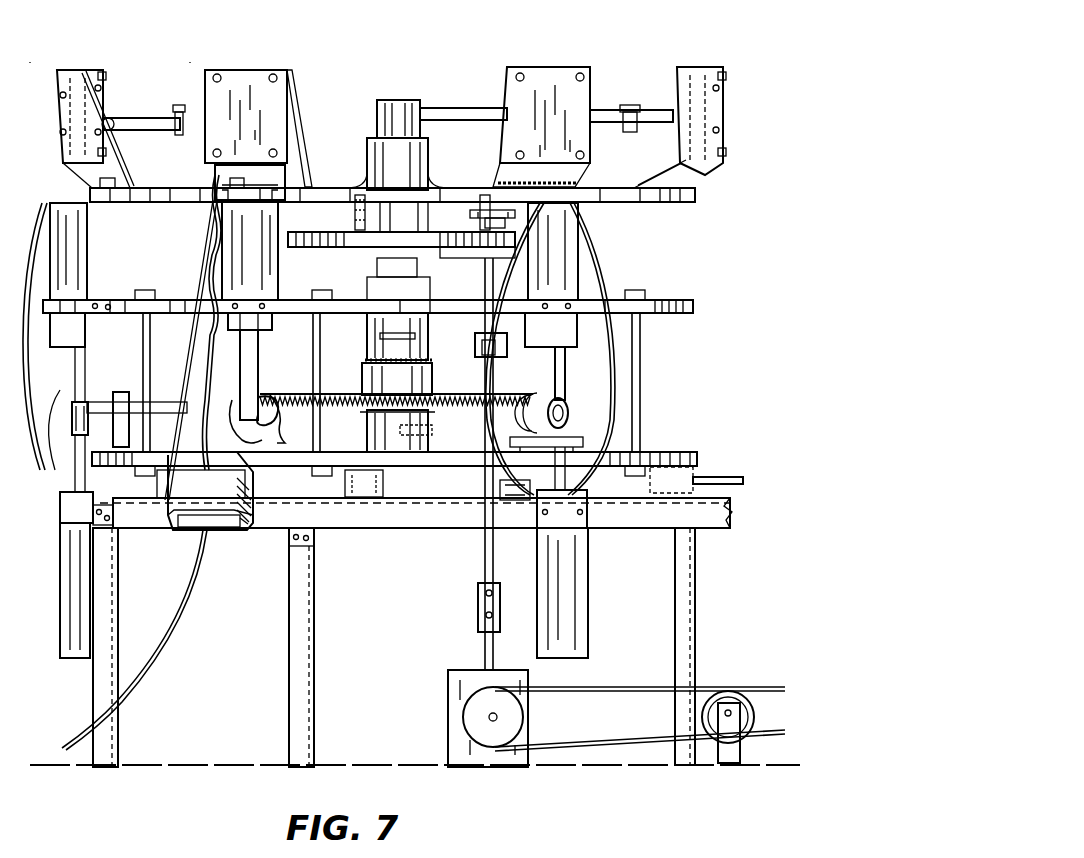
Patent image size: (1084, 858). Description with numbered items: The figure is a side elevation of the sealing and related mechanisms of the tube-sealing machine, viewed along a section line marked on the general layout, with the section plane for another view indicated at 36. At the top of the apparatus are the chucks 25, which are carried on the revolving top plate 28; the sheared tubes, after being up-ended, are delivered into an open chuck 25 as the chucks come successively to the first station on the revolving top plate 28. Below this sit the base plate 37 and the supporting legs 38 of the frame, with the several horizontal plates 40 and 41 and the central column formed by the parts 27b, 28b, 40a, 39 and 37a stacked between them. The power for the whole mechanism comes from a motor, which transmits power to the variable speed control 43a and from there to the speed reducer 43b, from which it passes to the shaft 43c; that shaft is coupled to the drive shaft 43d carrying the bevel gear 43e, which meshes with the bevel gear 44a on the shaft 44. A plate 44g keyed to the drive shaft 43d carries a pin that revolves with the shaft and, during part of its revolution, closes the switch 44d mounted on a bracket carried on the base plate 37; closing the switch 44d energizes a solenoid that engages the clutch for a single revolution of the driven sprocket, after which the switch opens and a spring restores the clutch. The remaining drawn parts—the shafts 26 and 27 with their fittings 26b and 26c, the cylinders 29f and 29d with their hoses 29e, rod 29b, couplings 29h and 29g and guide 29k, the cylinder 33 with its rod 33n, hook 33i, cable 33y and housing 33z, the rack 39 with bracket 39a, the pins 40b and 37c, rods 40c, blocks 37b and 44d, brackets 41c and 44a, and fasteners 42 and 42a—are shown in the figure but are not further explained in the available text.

The chuck 25 is at (62, 108).
The shaft 26 is at (662, 118).
The shaft 26b is at (130, 129).
The set screw 26c is at (178, 106).
The shaft 27 is at (472, 114).
The hub 27b is at (379, 106).
The revolving top plate 28 is at (622, 182).
The bearing housing 28b is at (426, 148).
The piston rod 29b is at (555, 365).
The air cylinder 29d is at (63, 582).
The air hose 29e is at (75, 370).
The air cylinder 29f is at (80, 266).
The fitting 29g is at (58, 488).
The coupling 29h is at (57, 453).
The guide block 29k is at (160, 398).
The cylinder 33 is at (282, 280).
The hook 33i is at (264, 398).
The piston rod 33n is at (256, 378).
The cable 33y is at (207, 222).
The housing 33z is at (197, 566).
The section line 36 is at (48, 42).
The base plate 37 is at (130, 212).
The column 37a is at (366, 432).
The block 37b is at (408, 471).
The pin 37c is at (430, 432).
The leg 38 is at (85, 689).
The rack gear 39 is at (352, 380).
The bracket 39a is at (274, 419).
The plate 40 is at (447, 310).
The column 40a is at (370, 338).
The pin 40b is at (415, 336).
The rod 40c is at (143, 350).
The collar 41 is at (362, 248).
The bracket 41c is at (482, 208).
The fastener 42 is at (352, 220).
The fastener 42a is at (362, 195).
The variable speed control 43a is at (731, 690).
The speed reducer 43b is at (448, 730).
The shaft 43c is at (480, 646).
The drive shaft 43d is at (485, 570).
The bevel gear 43e is at (482, 504).
The shaft 44 is at (743, 478).
The bevel gear 44a is at (500, 492).
The switch 44d is at (520, 340).
The plate 44g is at (480, 353).